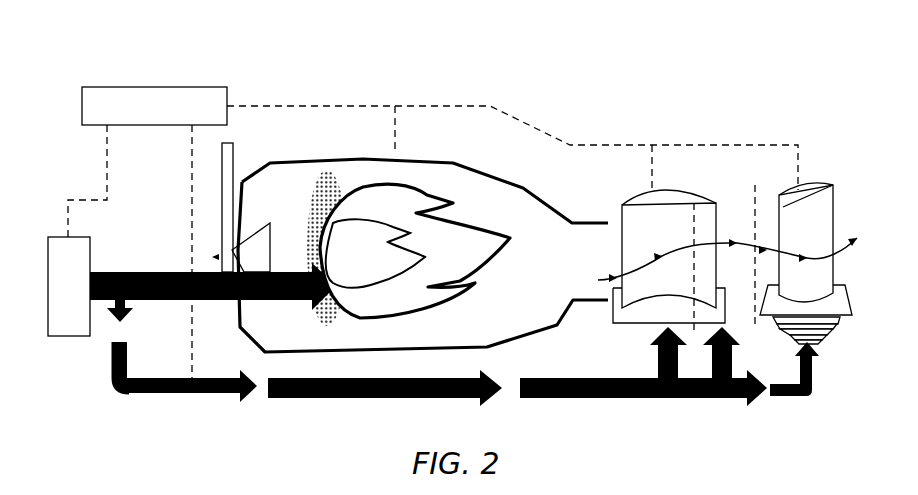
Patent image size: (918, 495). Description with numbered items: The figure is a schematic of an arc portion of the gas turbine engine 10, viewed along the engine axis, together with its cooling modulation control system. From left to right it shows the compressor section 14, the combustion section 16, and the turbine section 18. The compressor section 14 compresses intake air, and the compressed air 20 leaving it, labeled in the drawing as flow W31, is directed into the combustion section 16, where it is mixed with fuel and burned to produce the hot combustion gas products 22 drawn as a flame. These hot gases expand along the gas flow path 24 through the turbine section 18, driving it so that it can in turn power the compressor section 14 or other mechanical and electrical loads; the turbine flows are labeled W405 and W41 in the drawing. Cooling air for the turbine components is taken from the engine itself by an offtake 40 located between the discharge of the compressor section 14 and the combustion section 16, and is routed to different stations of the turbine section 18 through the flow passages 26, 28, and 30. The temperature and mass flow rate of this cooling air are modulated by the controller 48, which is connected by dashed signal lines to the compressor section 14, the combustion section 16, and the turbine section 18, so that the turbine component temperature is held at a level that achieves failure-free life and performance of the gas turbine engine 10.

The gas turbine engine 10 is at (580, 98).
The compressor section 14 is at (69, 286).
The combustion section 16 is at (418, 158).
The turbine section 18 is at (732, 209).
The compressed air 20 is at (213, 260).
The hot combustion gas products 22 is at (442, 243).
The gas flow path 24 is at (617, 281).
The flow passage 26 is at (658, 362).
The flow passage 28 is at (732, 362).
The flow passage 30 is at (812, 362).
The offtake 40 is at (128, 312).
The controller 48 is at (123, 88).
The compressor discharge air flow W31 is at (263, 287).
The first turbine flow W405 is at (690, 179).
The second turbine flow W41 is at (756, 179).